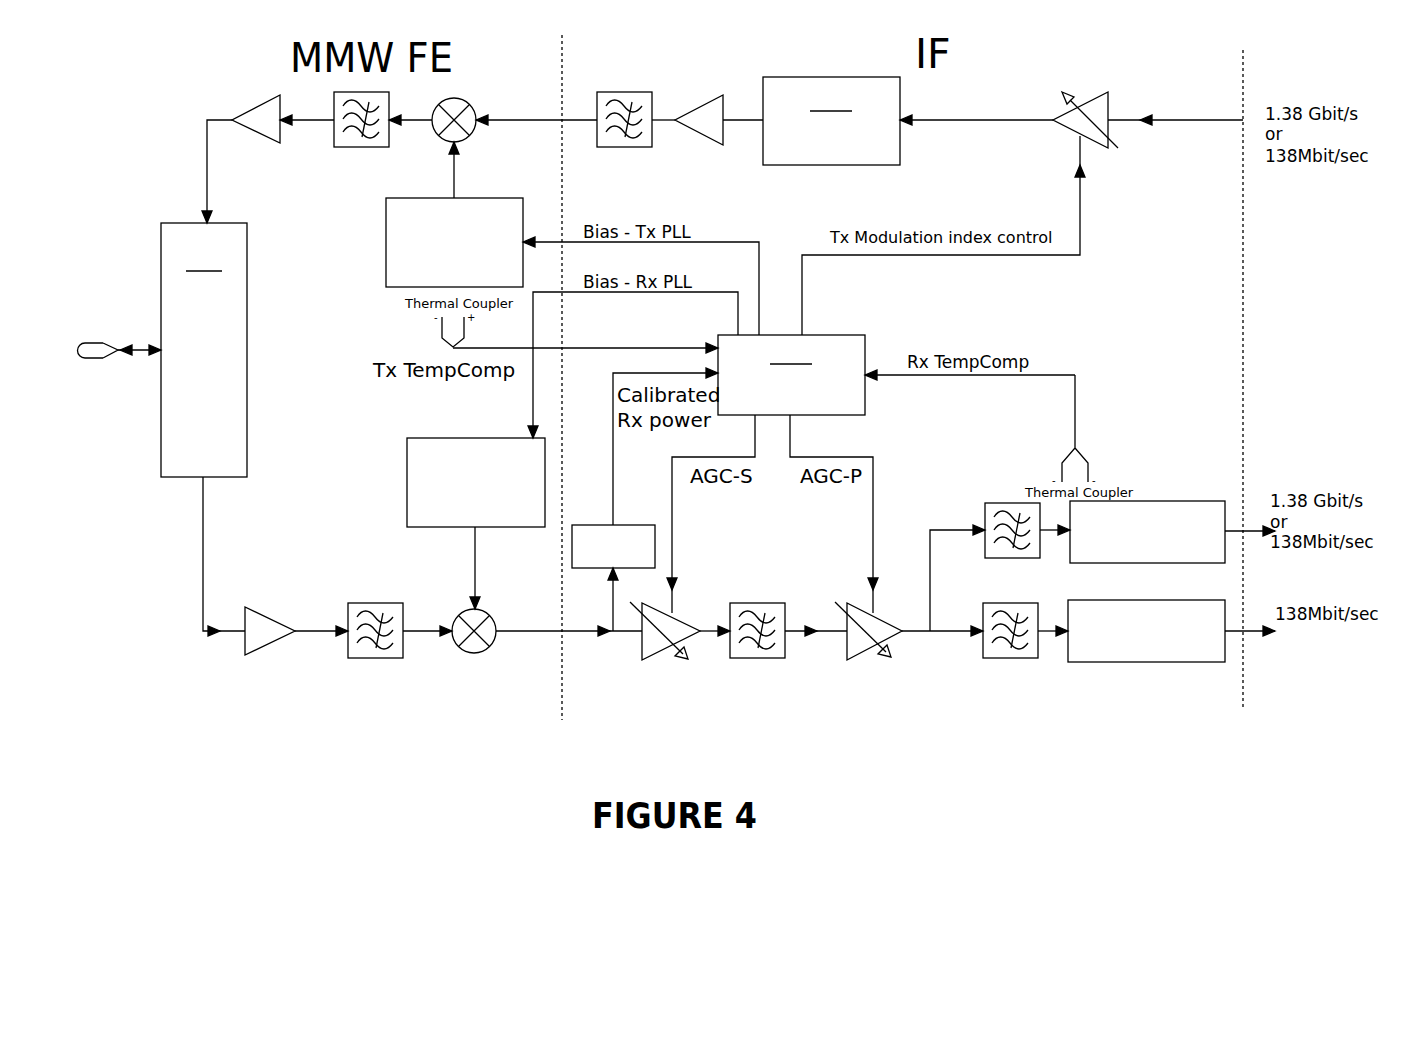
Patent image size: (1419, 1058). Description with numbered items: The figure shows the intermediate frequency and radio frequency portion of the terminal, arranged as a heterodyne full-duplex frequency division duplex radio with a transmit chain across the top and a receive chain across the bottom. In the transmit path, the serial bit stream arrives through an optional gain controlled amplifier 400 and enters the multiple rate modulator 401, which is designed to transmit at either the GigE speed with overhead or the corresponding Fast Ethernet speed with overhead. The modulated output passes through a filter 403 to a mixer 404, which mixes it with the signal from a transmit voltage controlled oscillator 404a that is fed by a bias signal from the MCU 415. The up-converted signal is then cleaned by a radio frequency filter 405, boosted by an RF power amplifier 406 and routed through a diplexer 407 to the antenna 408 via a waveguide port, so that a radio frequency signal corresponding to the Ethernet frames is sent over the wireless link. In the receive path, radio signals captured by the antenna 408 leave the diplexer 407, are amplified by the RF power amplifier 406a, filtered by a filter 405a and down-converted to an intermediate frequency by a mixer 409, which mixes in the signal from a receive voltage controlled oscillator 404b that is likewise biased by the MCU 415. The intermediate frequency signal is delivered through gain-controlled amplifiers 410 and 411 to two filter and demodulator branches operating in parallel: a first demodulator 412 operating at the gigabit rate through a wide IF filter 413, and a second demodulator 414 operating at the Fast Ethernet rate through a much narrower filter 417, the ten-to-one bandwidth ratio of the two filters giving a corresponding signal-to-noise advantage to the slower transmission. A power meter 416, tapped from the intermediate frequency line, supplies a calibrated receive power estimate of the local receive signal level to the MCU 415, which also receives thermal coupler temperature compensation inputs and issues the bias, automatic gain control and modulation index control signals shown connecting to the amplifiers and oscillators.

The gain controlled amplifier 400 is at (1097, 92).
The multiple rate modulator 401 is at (831, 121).
The filter 403 is at (632, 100).
The mixer 404 is at (475, 100).
The transmit voltage controlled oscillator 404a is at (408, 258).
The receive voltage controlled oscillator 404b is at (407, 465).
The radio frequency filter 405 is at (370, 142).
The filter 405a is at (362, 650).
The RF power amplifier 406 is at (263, 117).
The RF power amplifier 406a is at (265, 638).
The diplexer 407 is at (204, 350).
The antenna 408 is at (93, 312).
The mixer 409 is at (467, 648).
The gain-controlled amplifier 410 is at (652, 648).
The gain-controlled amplifier 411 is at (857, 640).
The first demodulator 412 is at (1152, 506).
The IF filter 413 is at (1002, 505).
The second demodulator 414 is at (1133, 655).
The MCU 415 is at (791, 375).
The power meter 416 is at (572, 566).
The filter 417 is at (1003, 648).